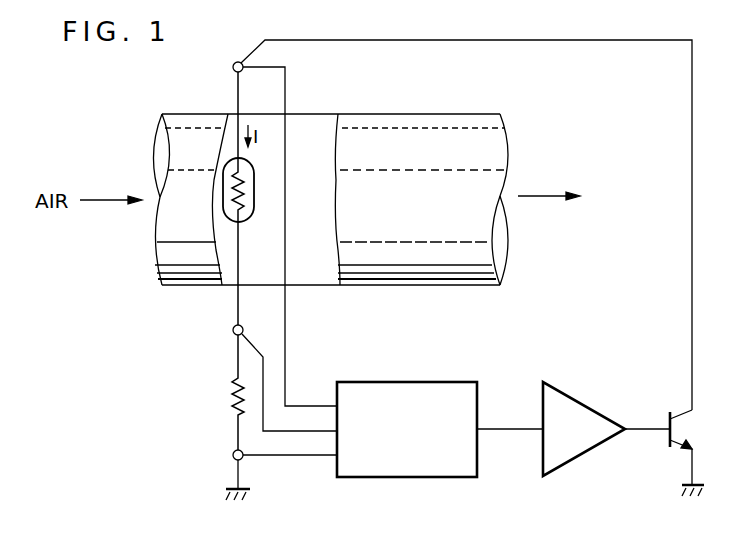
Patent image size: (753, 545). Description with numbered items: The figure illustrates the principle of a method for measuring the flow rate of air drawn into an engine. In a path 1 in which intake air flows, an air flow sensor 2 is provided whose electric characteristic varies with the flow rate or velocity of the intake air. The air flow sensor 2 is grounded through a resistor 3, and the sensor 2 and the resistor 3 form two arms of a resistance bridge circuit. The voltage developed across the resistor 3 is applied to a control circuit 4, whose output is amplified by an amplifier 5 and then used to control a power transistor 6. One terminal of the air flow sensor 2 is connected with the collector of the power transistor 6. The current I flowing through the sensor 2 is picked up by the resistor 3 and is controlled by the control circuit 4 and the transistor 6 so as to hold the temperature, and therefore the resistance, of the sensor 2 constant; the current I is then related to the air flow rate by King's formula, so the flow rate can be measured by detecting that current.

The path 1 is at (425, 118).
The air flow sensor 2 is at (224, 208).
The resistor 3 is at (232, 398).
The control circuit 4 is at (392, 381).
The amplifier 5 is at (586, 402).
The power transistor 6 is at (681, 428).